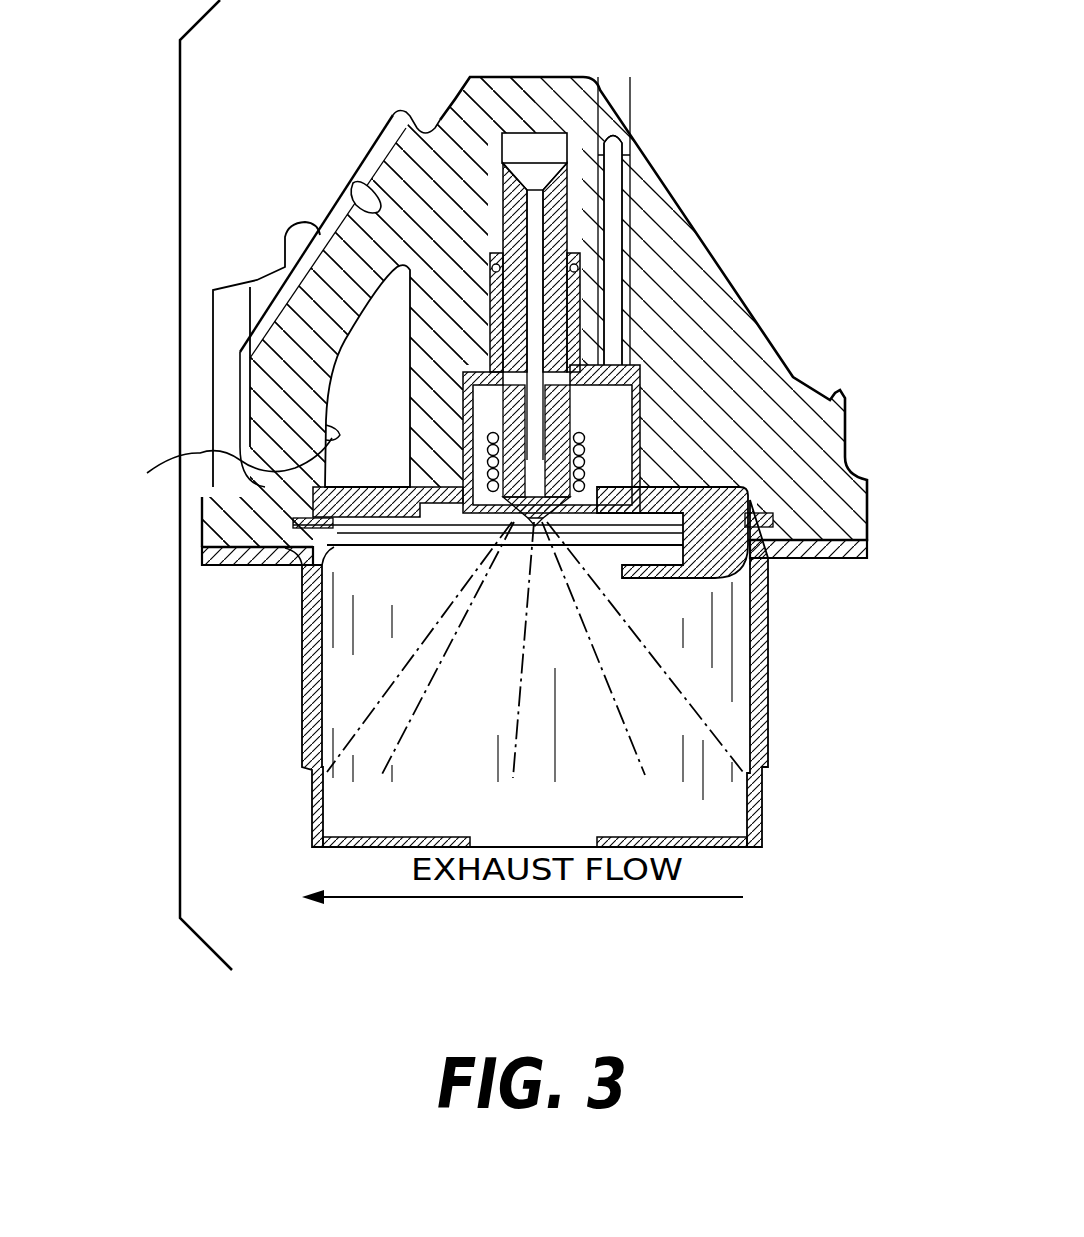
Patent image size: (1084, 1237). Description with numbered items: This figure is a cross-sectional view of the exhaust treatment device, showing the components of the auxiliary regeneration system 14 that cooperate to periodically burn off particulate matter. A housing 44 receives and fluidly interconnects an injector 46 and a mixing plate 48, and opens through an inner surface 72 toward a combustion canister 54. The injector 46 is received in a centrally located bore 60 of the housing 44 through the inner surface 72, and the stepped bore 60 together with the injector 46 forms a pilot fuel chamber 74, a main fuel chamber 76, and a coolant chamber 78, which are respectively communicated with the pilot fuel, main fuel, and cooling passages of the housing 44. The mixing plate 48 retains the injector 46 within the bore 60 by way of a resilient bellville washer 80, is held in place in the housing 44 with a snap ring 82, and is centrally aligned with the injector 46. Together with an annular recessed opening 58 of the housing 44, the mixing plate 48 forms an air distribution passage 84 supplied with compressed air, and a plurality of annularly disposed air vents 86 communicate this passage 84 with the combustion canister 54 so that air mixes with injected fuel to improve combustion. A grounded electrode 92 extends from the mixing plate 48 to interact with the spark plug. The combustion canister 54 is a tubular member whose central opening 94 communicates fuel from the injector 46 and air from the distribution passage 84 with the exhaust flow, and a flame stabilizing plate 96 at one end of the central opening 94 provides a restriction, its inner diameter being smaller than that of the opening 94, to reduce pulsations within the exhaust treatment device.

The auxiliary regeneration system 14 is at (180, 372).
The housing 44 is at (437, 197).
The injector 46 is at (613, 297).
The mixing plate 48 is at (697, 487).
The combustion canister 54 is at (535, 677).
The annular recessed opening 58 is at (217, 467).
The centrally located bore 60 is at (462, 90).
The inner surface 72 is at (823, 558).
The pilot fuel chamber 74 is at (533, 143).
The main fuel chamber 76 is at (505, 213).
The coolant chamber 78 is at (480, 315).
The bellville washer 80 is at (590, 503).
The snap ring 82 is at (300, 533).
The air distribution passage 84 is at (395, 406).
The air vents 86 is at (427, 483).
The grounded electrode 92 is at (635, 565).
The central opening 94 is at (479, 741).
The flame stabilizing plate 96 is at (315, 853).